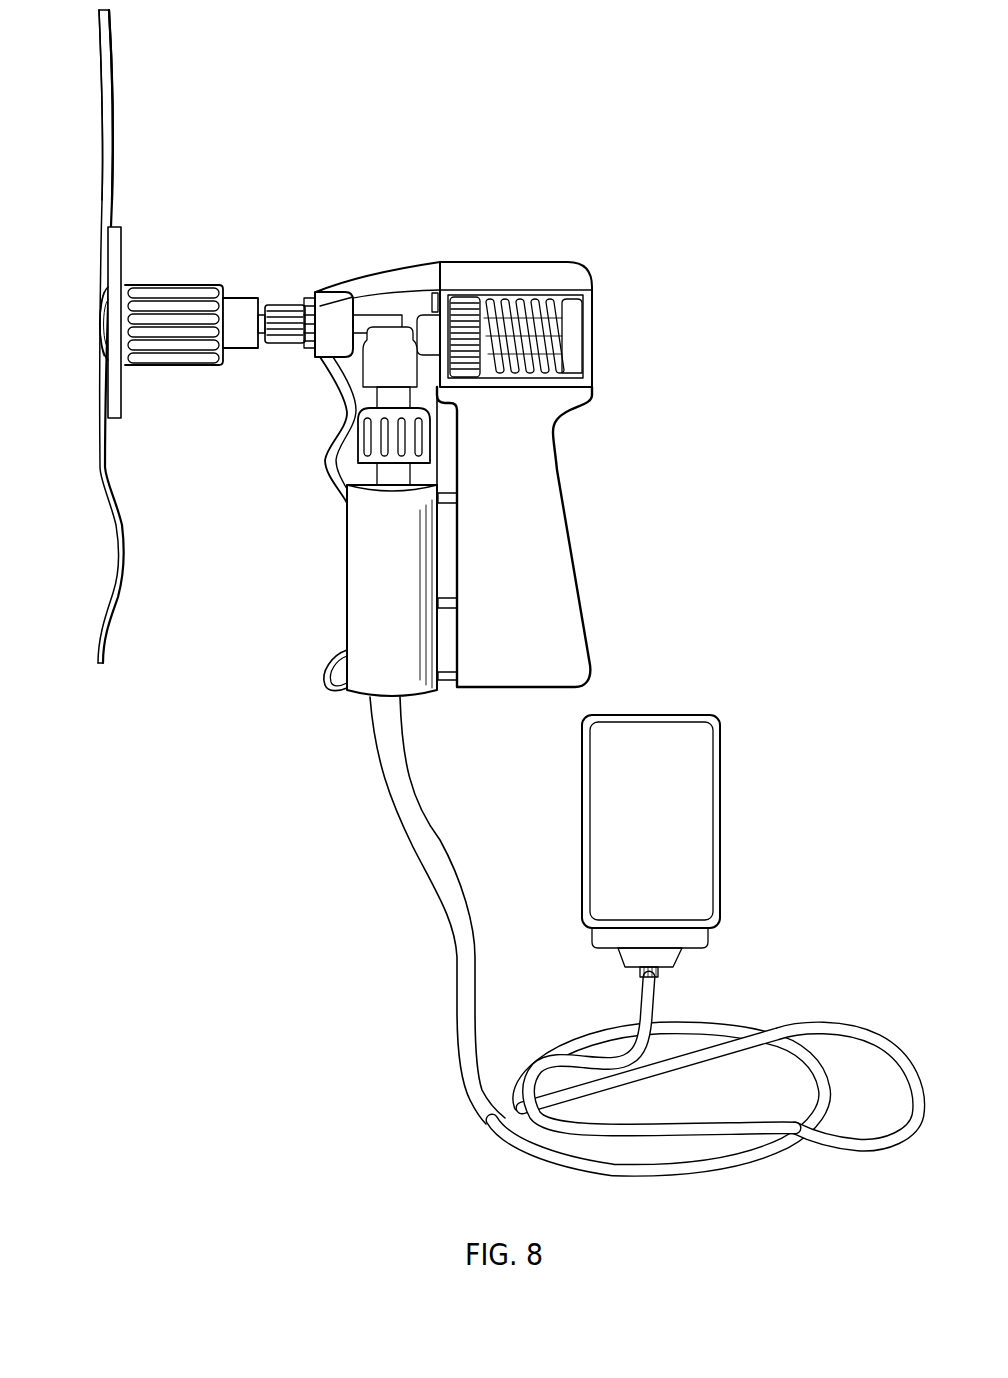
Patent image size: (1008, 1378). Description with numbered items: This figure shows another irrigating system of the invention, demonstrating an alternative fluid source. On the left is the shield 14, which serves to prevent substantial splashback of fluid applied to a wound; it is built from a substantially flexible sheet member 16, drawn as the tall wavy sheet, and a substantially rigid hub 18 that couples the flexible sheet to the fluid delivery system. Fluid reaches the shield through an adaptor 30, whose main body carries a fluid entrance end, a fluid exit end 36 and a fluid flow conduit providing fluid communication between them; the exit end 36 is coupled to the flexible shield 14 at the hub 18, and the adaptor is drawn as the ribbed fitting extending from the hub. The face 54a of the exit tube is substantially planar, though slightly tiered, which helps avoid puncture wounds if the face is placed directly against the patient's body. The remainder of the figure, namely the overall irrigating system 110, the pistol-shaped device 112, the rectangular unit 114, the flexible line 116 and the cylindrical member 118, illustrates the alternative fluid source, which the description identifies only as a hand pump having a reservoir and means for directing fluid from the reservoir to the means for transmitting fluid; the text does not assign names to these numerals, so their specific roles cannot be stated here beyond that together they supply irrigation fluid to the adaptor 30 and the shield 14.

The shield 14 is at (127, 612).
The substantially flexible sheet member 16 is at (112, 63).
The substantially rigid hub 18 is at (118, 259).
The adaptor 30 is at (239, 294).
The fluid exit end 36 is at (95, 322).
The face of exit tube 54a is at (92, 308).
The dispensing system 110 is at (303, 765).
The dispensing gun 112 is at (632, 458).
The power supply 114 is at (753, 805).
The supply tube 116 is at (412, 810).
The cartridge canister 118 is at (358, 542).